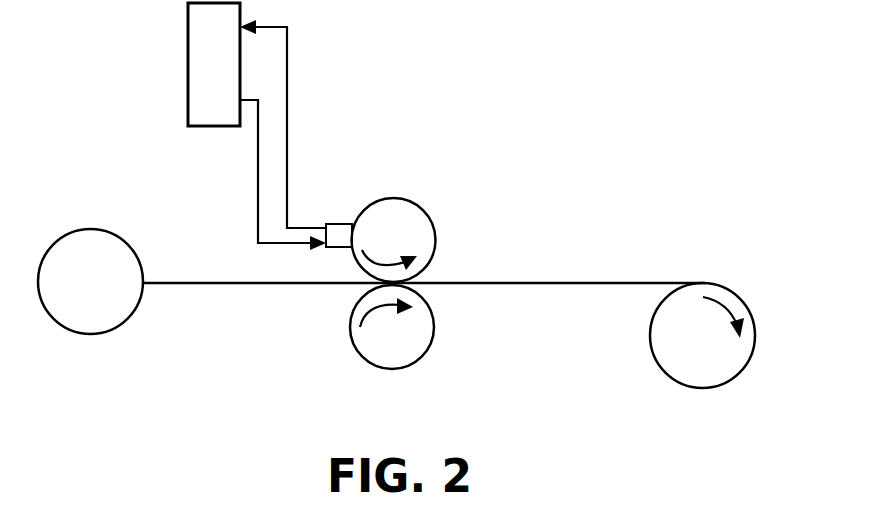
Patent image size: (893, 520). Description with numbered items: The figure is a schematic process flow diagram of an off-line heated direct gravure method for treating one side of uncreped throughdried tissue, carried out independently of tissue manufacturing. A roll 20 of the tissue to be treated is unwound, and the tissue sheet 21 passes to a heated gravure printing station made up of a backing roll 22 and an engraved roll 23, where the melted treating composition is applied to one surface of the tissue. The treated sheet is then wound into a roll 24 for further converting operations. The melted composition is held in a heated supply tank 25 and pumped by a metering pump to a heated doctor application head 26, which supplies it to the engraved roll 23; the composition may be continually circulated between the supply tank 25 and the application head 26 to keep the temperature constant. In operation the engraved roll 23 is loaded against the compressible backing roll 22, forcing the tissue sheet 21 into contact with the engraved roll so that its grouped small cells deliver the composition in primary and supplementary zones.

The roll 20 is at (90, 229).
The tissue sheet 21 is at (217, 285).
The backing roll 22 is at (433, 338).
The engraved roll 23 is at (418, 202).
The roll 24 is at (753, 318).
The heated supply tank 25 is at (188, 40).
The heated doctor application head 26 is at (337, 224).